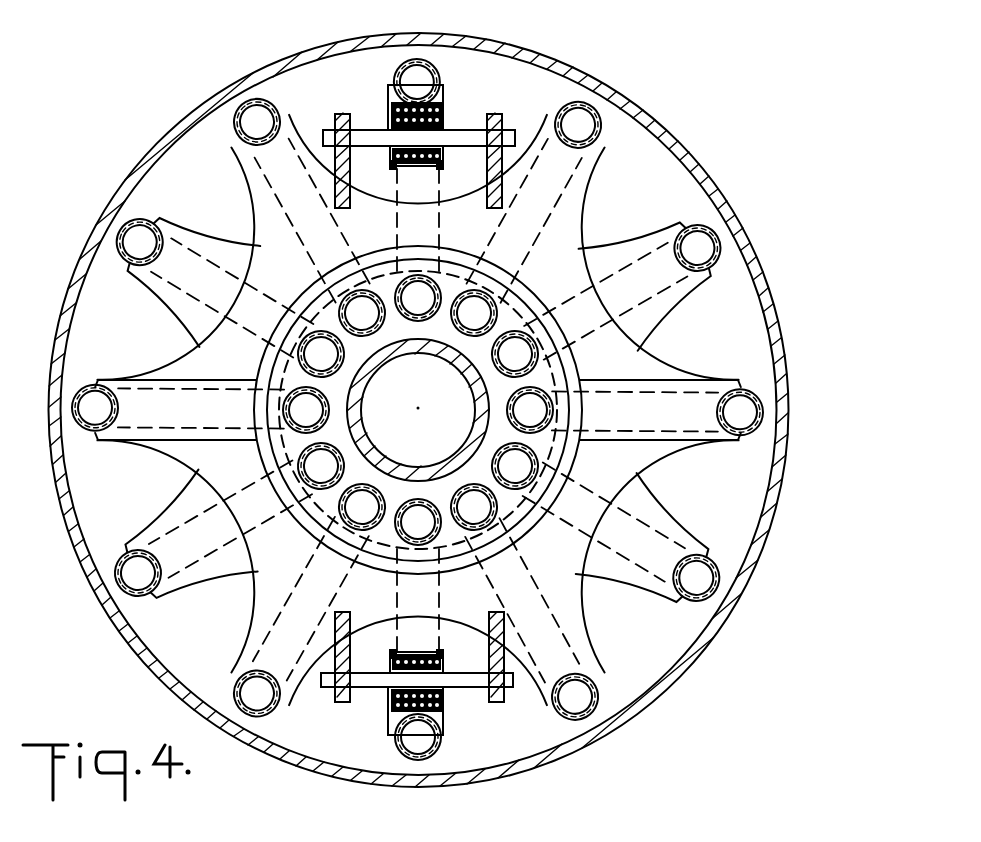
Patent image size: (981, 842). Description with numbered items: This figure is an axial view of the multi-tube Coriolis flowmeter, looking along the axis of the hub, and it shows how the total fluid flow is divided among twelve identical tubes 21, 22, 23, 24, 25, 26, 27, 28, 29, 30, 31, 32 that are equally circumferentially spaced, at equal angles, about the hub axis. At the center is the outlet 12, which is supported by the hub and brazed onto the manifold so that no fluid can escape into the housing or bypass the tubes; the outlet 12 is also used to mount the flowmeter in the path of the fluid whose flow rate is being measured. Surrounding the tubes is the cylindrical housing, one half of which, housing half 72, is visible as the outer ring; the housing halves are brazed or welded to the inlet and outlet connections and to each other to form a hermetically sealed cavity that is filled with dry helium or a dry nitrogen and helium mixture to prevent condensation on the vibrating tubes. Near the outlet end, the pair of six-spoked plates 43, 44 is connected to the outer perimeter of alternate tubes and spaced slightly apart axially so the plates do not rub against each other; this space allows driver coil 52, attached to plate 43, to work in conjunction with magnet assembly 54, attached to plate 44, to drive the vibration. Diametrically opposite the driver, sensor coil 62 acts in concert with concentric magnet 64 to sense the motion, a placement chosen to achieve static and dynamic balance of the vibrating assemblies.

The outlet 12 is at (418, 468).
The tube 21 is at (426, 61).
The tube 22 is at (592, 107).
The tube 23 is at (722, 247).
The tube 24 is at (757, 420).
The tube 25 is at (718, 587).
The tube 26 is at (597, 702).
The tube 27 is at (422, 757).
The tube 28 is at (260, 718).
The tube 29 is at (128, 593).
The tube 30 is at (80, 422).
The tube 31 is at (123, 233).
The tube 32 is at (240, 106).
The plate 43 is at (392, 82).
The plate 44 is at (650, 238).
The driver coil 52 is at (438, 102).
The magnet assembly 54 is at (468, 136).
The sensor coil 62 is at (443, 700).
The magnet 64 is at (363, 690).
The housing half 72 is at (705, 166).